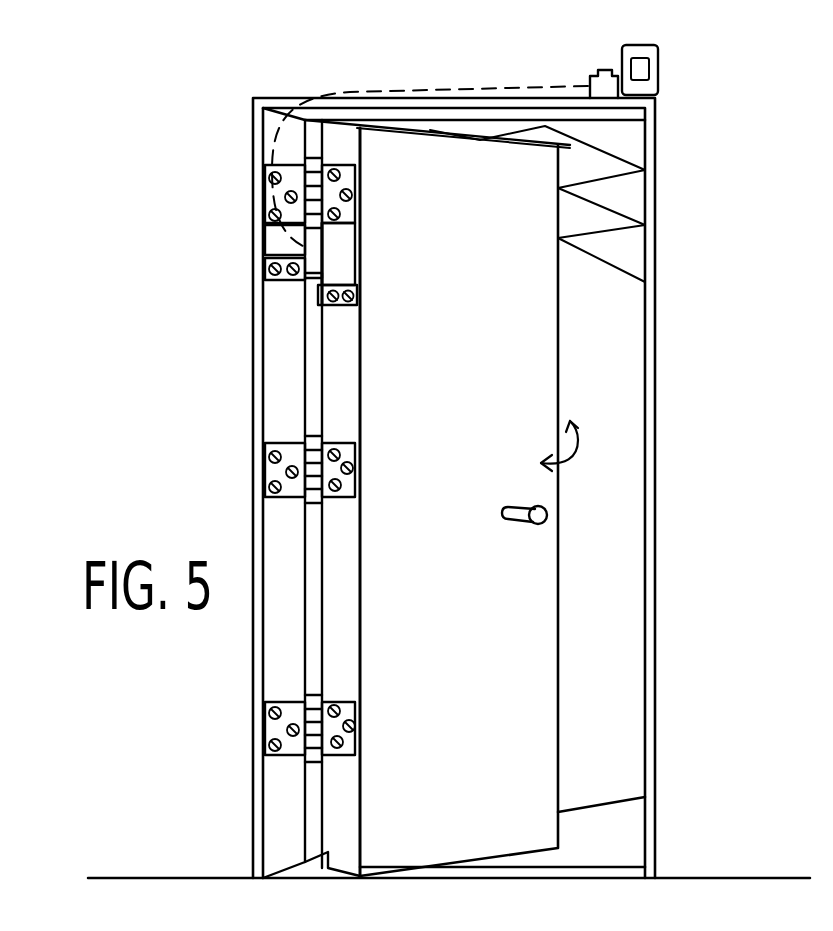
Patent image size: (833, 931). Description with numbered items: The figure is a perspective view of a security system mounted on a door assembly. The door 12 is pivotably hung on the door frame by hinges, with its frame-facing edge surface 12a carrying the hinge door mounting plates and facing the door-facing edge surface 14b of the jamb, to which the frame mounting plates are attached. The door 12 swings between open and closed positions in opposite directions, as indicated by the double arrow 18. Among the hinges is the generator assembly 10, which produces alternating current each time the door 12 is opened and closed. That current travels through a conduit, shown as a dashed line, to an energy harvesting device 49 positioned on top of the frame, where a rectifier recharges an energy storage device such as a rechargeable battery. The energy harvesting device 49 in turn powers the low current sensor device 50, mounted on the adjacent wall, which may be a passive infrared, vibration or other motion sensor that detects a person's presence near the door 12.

The generator assembly 10 is at (300, 292).
The door 12 is at (553, 362).
The frame-facing edge surface 12a is at (340, 388).
The door-facing edge surface 14b is at (282, 360).
The double arrow 18 is at (565, 462).
The energy harvesting device 49 is at (590, 78).
The sensor device 50 is at (660, 75).